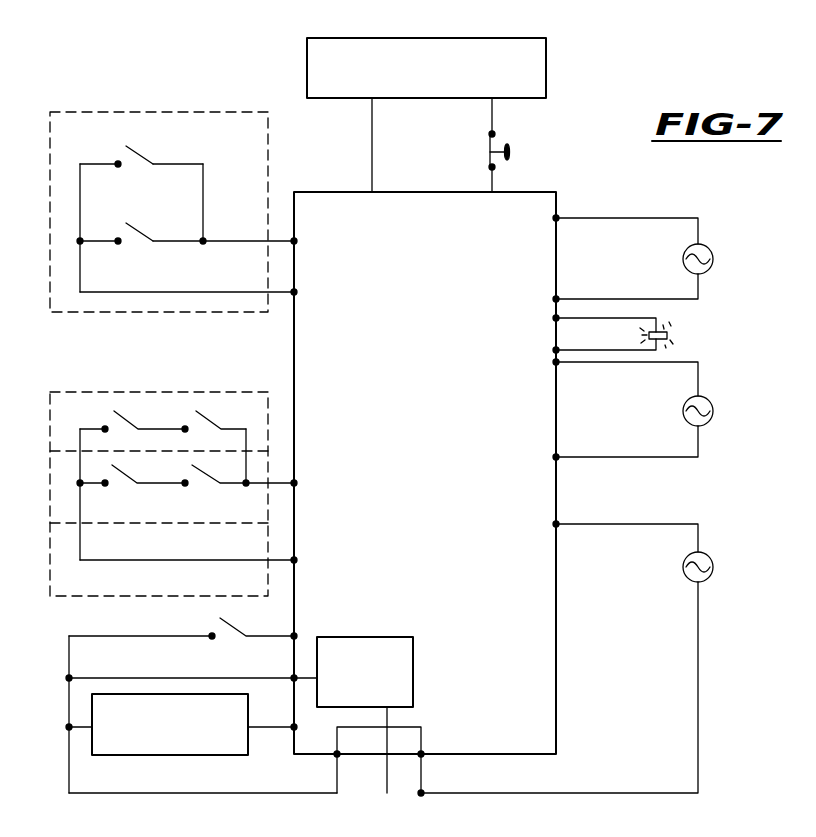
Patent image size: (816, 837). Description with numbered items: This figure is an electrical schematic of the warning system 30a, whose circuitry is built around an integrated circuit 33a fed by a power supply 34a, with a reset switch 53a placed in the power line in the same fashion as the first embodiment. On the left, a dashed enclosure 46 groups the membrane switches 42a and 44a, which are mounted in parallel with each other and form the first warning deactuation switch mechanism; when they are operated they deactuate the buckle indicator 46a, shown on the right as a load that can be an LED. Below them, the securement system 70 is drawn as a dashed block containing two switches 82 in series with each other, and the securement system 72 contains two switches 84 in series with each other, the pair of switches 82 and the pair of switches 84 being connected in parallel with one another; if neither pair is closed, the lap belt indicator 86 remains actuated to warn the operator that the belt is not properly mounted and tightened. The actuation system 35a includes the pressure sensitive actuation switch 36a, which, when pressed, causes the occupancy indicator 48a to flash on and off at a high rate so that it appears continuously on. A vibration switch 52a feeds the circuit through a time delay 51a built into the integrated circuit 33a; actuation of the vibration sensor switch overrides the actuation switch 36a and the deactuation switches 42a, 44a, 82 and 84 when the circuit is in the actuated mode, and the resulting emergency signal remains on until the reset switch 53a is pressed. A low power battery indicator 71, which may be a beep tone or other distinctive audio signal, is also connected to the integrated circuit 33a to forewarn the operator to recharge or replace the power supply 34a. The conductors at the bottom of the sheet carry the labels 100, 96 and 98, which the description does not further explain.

The warning system 30a is at (583, 168).
The integrated circuit 33a is at (553, 218).
The power supply 34a is at (548, 54).
The reset switch 53a is at (509, 152).
The switch block 46 is at (90, 112).
The membrane switch 42a is at (143, 160).
The membrane switch 44a is at (142, 234).
The buckle indicator 46a is at (713, 258).
The low power battery indicator 71 is at (669, 336).
The lap belt indicator 86 is at (713, 410).
The occupancy indicator 48a is at (713, 566).
The securement system 70 is at (76, 406).
The switches 82 is at (199, 418).
The switches 84 is at (199, 466).
The securement system 72 is at (256, 500).
The actuation system 35a is at (68, 662).
The actuation switch 36a is at (228, 631).
The time delay 51a is at (393, 637).
The vibration switch 52a is at (250, 742).
The conductor 100 is at (426, 836).
The conductor 96 is at (557, 830).
The conductor 98 is at (784, 835).